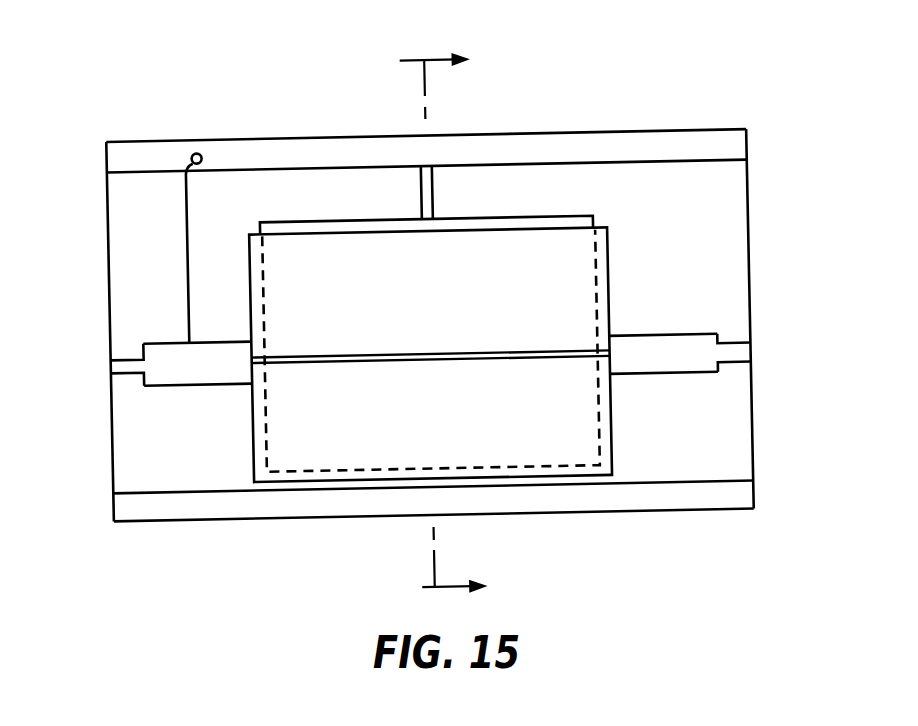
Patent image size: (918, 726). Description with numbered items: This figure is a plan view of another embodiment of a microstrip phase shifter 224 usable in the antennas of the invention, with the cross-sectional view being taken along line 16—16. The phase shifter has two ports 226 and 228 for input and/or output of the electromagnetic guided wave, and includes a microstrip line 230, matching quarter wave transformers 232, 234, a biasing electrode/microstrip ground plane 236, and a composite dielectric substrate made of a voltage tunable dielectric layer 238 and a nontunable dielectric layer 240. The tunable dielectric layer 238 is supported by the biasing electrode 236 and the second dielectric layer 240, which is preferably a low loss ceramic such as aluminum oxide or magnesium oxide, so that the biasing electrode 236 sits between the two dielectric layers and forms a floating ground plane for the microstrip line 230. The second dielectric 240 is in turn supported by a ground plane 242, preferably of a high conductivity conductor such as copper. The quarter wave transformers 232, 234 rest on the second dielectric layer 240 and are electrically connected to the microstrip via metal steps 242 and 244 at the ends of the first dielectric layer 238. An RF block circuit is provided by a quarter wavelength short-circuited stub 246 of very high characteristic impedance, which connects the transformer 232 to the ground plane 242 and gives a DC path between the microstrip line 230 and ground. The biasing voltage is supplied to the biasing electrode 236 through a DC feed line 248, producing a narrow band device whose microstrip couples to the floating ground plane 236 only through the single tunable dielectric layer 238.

The section line 16— 16 is at (449, 322).
The phase shifter assembly 224 is at (624, 114).
The port 226 is at (110, 372).
The port 228 is at (757, 353).
The microstrip line 230 is at (470, 350).
The matching quarter wave transformer 232 is at (175, 378).
The matching quarter wave transformer 234 is at (687, 368).
The biasing electrode/microstrip ground plane 236 is at (558, 215).
The voltage tunable dielectric layer 238 is at (611, 280).
The nontunable dielectric layer 240 is at (732, 237).
The ground plane 242 is at (732, 146).
The metal step 244 is at (613, 352).
The quarter wavelength short-circuited stub 246 is at (190, 206).
The DC feed line 248 is at (433, 194).